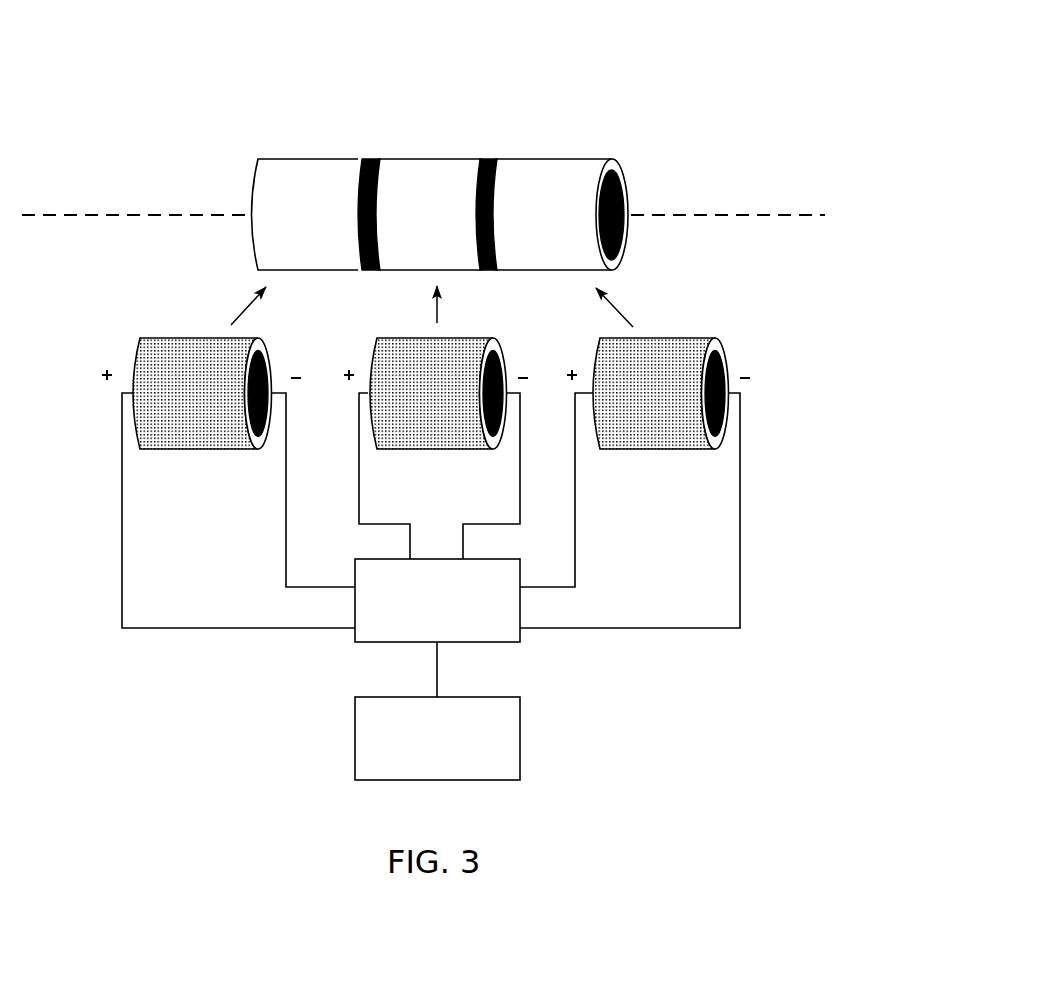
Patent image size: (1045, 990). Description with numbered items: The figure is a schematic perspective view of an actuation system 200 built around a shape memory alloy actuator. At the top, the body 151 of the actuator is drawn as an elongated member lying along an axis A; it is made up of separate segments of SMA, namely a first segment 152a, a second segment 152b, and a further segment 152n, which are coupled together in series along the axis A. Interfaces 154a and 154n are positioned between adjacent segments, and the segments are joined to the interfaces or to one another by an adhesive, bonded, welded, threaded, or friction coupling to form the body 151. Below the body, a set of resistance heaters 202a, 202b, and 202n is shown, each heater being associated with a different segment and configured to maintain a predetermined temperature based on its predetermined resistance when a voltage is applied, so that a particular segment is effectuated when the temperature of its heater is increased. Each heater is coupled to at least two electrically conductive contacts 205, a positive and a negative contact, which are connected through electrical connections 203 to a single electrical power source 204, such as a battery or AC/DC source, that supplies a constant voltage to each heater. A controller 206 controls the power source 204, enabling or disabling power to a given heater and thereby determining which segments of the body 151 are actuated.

The actuation system 200 is at (273, 64).
The body 151 is at (652, 135).
The segment 152a is at (295, 172).
The segment 152b is at (418, 172).
The segment 152n is at (551, 172).
The interface 154a is at (371, 162).
The interface 154n is at (491, 162).
The resistance heater 202a is at (242, 346).
The resistance heater 202b is at (464, 346).
The resistance heater 202n is at (687, 346).
The electrical connection 203 is at (173, 662).
The electrical power source 204 is at (437, 600).
The electrically conductive contact 205 is at (97, 361).
The controller 206 is at (437, 738).
The axis A is at (800, 215).